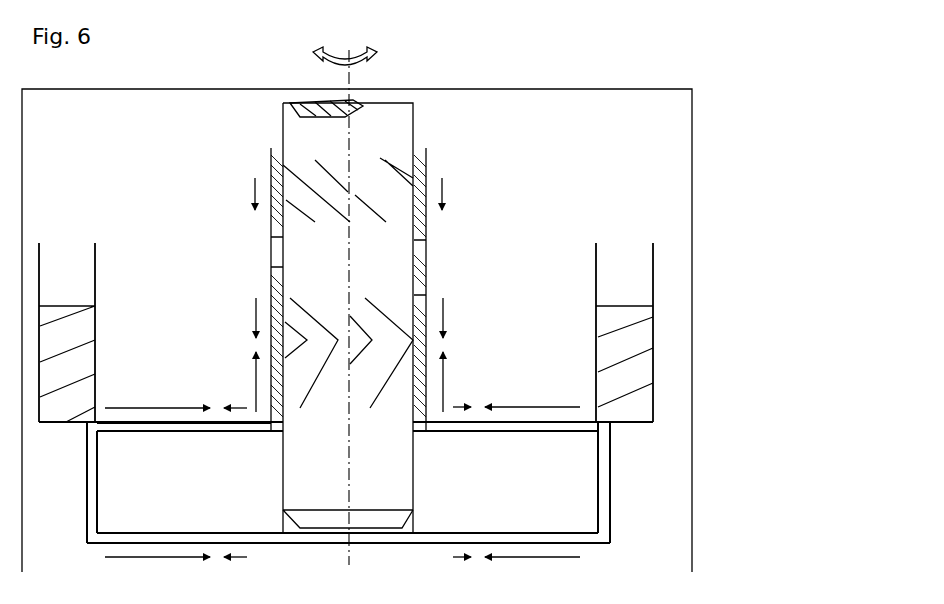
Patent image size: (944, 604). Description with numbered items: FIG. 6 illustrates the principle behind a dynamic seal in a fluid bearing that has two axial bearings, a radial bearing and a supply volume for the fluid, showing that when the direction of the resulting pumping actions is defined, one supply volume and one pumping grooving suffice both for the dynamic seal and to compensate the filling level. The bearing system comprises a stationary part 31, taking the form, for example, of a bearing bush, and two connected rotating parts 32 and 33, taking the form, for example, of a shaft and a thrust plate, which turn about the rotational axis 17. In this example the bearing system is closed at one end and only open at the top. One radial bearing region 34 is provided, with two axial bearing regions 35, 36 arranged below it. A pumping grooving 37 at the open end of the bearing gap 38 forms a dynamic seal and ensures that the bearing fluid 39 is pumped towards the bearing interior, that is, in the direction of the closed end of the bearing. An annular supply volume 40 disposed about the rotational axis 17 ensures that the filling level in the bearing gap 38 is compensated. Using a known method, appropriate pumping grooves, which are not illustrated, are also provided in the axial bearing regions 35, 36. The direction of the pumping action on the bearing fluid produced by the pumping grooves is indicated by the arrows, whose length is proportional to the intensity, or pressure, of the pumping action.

The rotational axis 17 is at (352, 89).
The stationary part 31 is at (520, 325).
The rotating part 32 is at (393, 125).
The rotating part 33 is at (533, 488).
The radial bearing region 34 is at (427, 290).
The axial bearing region 35 is at (233, 427).
The axial bearing region 36 is at (105, 540).
The pumping grooving 37 is at (362, 200).
The bearing gap 38 is at (270, 150).
The bearing fluid 39 is at (426, 245).
The supply volume 40 is at (654, 300).